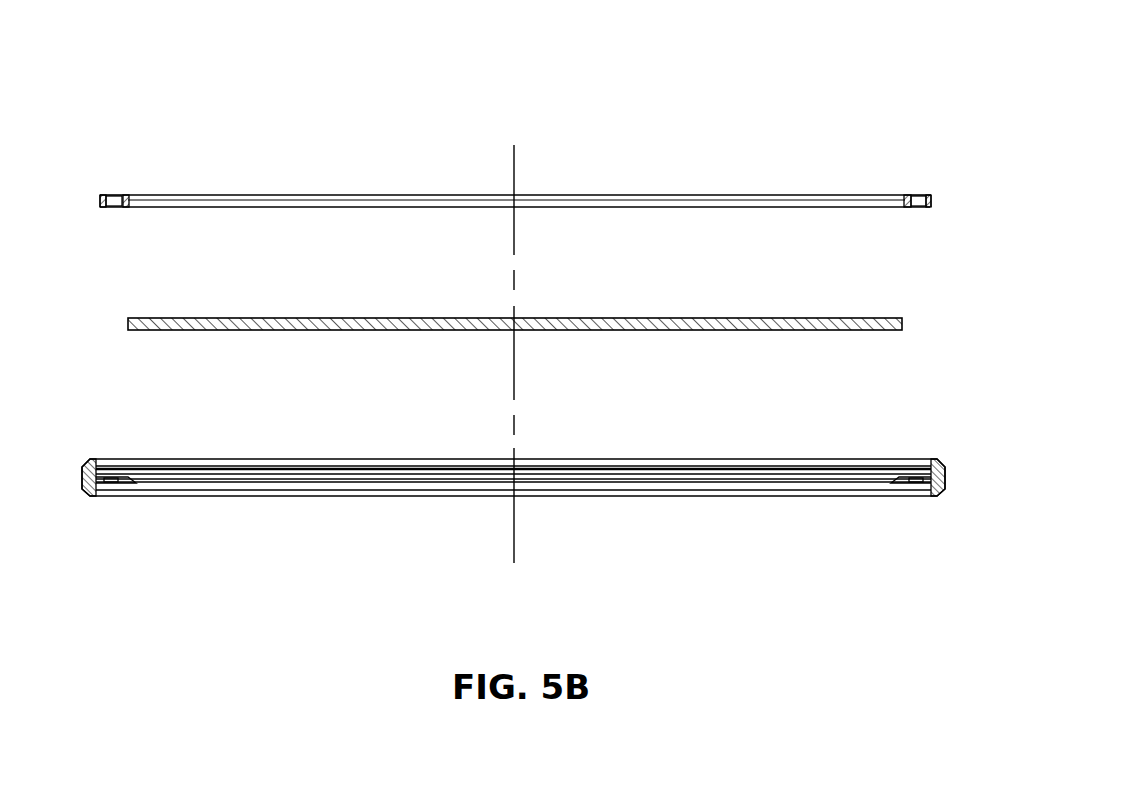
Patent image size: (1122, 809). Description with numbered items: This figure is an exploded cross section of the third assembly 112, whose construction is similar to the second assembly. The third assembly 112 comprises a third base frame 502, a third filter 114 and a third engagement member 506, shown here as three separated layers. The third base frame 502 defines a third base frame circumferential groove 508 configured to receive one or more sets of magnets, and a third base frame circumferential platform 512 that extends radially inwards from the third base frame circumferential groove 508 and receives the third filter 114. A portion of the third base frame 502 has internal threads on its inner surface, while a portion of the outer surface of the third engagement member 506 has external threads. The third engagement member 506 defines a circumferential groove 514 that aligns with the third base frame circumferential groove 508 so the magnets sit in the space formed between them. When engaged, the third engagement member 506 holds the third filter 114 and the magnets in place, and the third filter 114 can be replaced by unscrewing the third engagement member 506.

The third assembly 112 is at (502, 294).
The third engagement member 506 is at (515, 168).
The circumferential groove 514 is at (77, 244).
The third filter 114 is at (537, 368).
The third base frame 502 is at (499, 517).
The third base frame circumferential groove 508 is at (142, 434).
The third base frame circumferential platform 512 is at (864, 435).